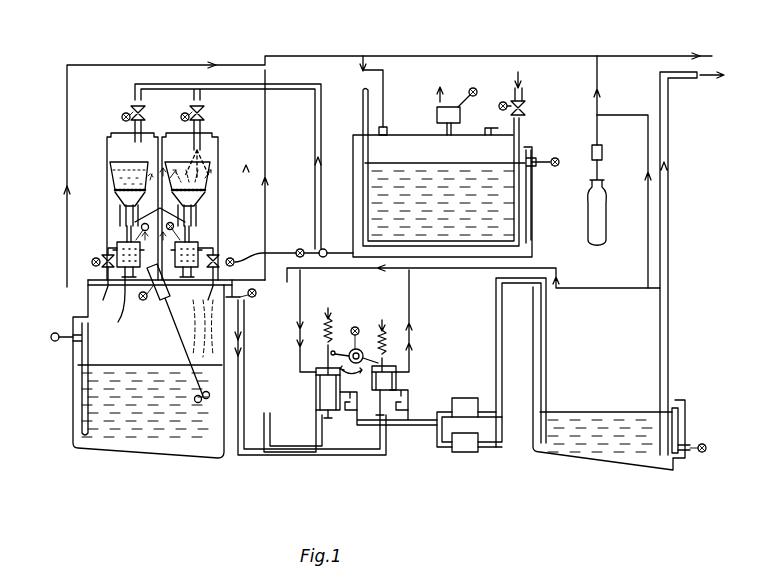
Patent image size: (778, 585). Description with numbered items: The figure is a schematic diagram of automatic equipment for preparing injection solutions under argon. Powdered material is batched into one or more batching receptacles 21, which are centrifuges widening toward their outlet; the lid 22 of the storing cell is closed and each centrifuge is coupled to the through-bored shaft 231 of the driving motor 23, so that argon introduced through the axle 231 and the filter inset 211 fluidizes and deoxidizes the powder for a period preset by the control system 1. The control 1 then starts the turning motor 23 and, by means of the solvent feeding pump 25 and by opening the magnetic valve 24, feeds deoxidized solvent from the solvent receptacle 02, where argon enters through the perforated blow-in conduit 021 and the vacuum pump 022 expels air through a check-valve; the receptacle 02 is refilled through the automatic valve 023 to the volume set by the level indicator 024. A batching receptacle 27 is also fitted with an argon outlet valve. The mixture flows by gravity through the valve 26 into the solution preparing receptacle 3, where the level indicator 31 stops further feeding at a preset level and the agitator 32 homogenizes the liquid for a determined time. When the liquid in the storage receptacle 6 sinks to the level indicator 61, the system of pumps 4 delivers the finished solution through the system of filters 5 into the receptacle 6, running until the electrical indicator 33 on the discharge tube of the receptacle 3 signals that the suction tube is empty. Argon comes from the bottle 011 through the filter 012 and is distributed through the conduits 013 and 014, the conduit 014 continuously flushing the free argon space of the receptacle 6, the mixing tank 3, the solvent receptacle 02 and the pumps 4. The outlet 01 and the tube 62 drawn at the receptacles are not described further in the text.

The control system 1 is at (131, 113).
The outlet pipe 01 is at (125, 302).
The solvent receptacle 02 is at (526, 140).
The bottle 011 is at (605, 212).
The filter 012 is at (603, 153).
The conduit 013 is at (600, 57).
The conduit 014 is at (67, 129).
The perforated blow-in conduit 021 is at (362, 97).
The vacuum pump 022 is at (449, 107).
The automatic valve 023 is at (524, 103).
The level indicator 024 is at (532, 164).
The solution preparing receptacle 3 is at (88, 302).
The system of pumps 4 is at (317, 414).
The system of filters 5 is at (472, 452).
The liquid receptacle 6 is at (568, 464).
The batching receptacle 21 is at (108, 165).
The lid 22 is at (116, 130).
The driving motor 23 is at (116, 238).
The magnetic valve 24 is at (198, 100).
The solvent feeding pump 25 is at (326, 250).
The valve 26 is at (100, 252).
The batching receptacle 27 is at (205, 122).
The level indicator 31 is at (73, 342).
The agitator 32 is at (200, 402).
The electrical indicator 33 is at (246, 320).
The level indicator 61 is at (690, 456).
The tube 62 is at (670, 116).
The filter inset 211 is at (112, 191).
The through-bored shaft 231 is at (118, 218).